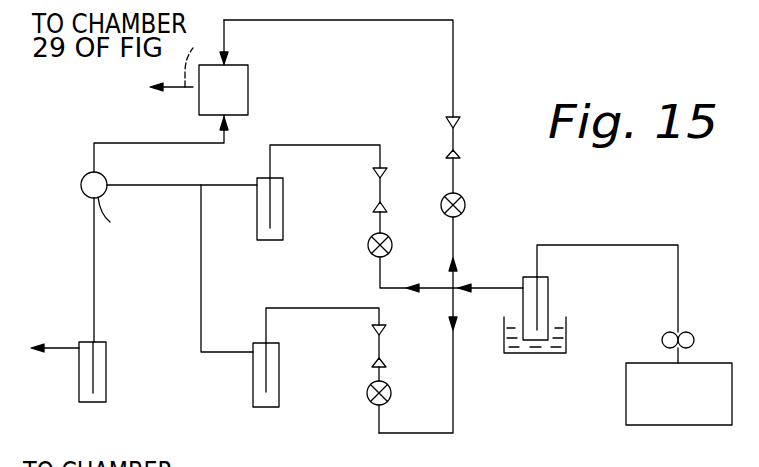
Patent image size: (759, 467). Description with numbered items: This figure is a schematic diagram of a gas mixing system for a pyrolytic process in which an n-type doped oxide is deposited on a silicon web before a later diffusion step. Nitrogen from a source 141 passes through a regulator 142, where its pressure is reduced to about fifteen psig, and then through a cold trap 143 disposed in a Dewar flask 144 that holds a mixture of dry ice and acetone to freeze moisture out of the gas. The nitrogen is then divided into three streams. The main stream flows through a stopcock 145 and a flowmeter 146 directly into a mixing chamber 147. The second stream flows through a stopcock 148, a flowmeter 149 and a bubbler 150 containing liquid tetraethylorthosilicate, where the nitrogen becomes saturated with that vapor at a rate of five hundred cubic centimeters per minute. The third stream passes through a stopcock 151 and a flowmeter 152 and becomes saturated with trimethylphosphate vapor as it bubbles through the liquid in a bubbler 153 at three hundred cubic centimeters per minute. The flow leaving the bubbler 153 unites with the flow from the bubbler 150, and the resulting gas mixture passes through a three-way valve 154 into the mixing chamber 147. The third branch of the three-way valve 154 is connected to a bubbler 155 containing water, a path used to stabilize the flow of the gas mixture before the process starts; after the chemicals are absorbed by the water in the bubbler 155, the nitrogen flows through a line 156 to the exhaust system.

The source 141 is at (688, 425).
The regulator 142 is at (693, 336).
The cold trap 143 is at (548, 291).
The Dewar flask 144 is at (566, 338).
The stopcock 145 is at (465, 205).
The flowmeter 146 is at (453, 135).
The mixing chamber 147 is at (248, 90).
The stopcock 148 is at (392, 245).
The flowmeter 149 is at (380, 190).
The bubbler 150 is at (283, 200).
The stopcock 151 is at (391, 393).
The flowmeter 152 is at (379, 345).
The bubbler 153 is at (279, 375).
The 3-way valve 154 is at (104, 176).
The bubbler 155 is at (106, 367).
The line 156 is at (53, 376).